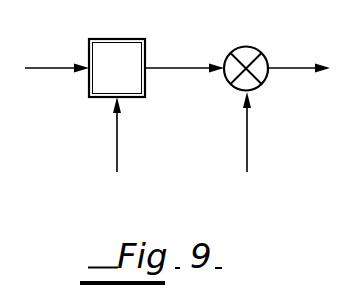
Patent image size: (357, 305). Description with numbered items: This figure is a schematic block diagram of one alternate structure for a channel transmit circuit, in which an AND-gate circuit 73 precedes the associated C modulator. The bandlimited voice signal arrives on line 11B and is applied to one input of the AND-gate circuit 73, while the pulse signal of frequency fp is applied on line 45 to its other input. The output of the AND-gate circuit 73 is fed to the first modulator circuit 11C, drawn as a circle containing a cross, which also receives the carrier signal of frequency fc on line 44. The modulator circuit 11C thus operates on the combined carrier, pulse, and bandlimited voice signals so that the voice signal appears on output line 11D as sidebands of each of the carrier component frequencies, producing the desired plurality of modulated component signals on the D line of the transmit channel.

The AND-gate circuit 73 is at (109, 39).
The bandlimited voice signal line 11B is at (36, 68).
The first modulator circuit 11C is at (241, 47).
The modulator output line 11D is at (291, 68).
The pulse frequency input 45 is at (118, 117).
The carrier frequency input 44 is at (249, 114).